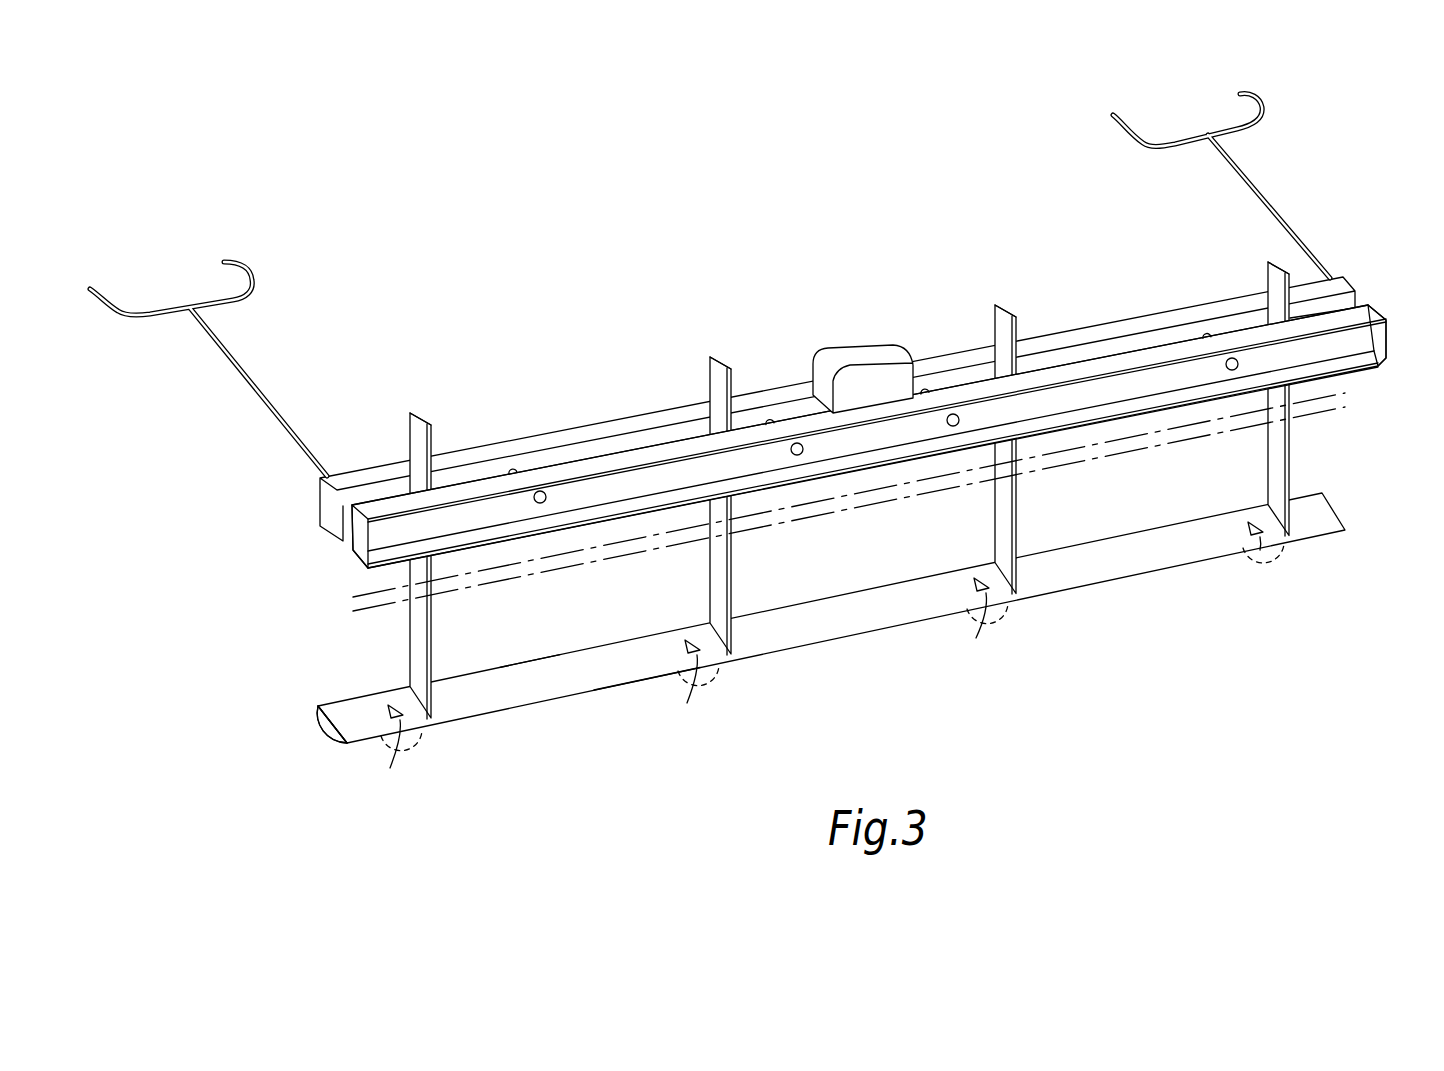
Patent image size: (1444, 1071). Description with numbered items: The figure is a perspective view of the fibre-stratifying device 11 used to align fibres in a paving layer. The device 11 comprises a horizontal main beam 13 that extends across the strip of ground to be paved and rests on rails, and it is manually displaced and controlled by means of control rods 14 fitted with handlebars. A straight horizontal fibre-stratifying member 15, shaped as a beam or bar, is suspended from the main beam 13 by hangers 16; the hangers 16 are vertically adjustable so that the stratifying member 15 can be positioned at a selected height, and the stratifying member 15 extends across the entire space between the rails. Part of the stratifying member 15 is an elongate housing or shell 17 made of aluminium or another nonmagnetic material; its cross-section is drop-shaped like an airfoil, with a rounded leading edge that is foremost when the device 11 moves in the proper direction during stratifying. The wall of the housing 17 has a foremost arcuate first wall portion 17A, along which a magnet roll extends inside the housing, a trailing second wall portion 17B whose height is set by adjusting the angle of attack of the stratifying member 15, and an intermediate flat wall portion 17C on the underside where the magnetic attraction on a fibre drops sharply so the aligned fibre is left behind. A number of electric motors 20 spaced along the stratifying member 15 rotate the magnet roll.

The fibre-stratifying device 11 is at (872, 665).
The horizontal main beam 13 is at (1372, 311).
The control rods 14 is at (240, 357).
The fibre-stratifying member 15 is at (530, 707).
The hangers 16 is at (432, 640).
The elongate housing 17 is at (462, 708).
The first wall portion 17A is at (317, 711).
The second wall portion 17B is at (595, 692).
The intermediate flat wall portion 17C is at (322, 733).
The electric motors 20 is at (831, 662).